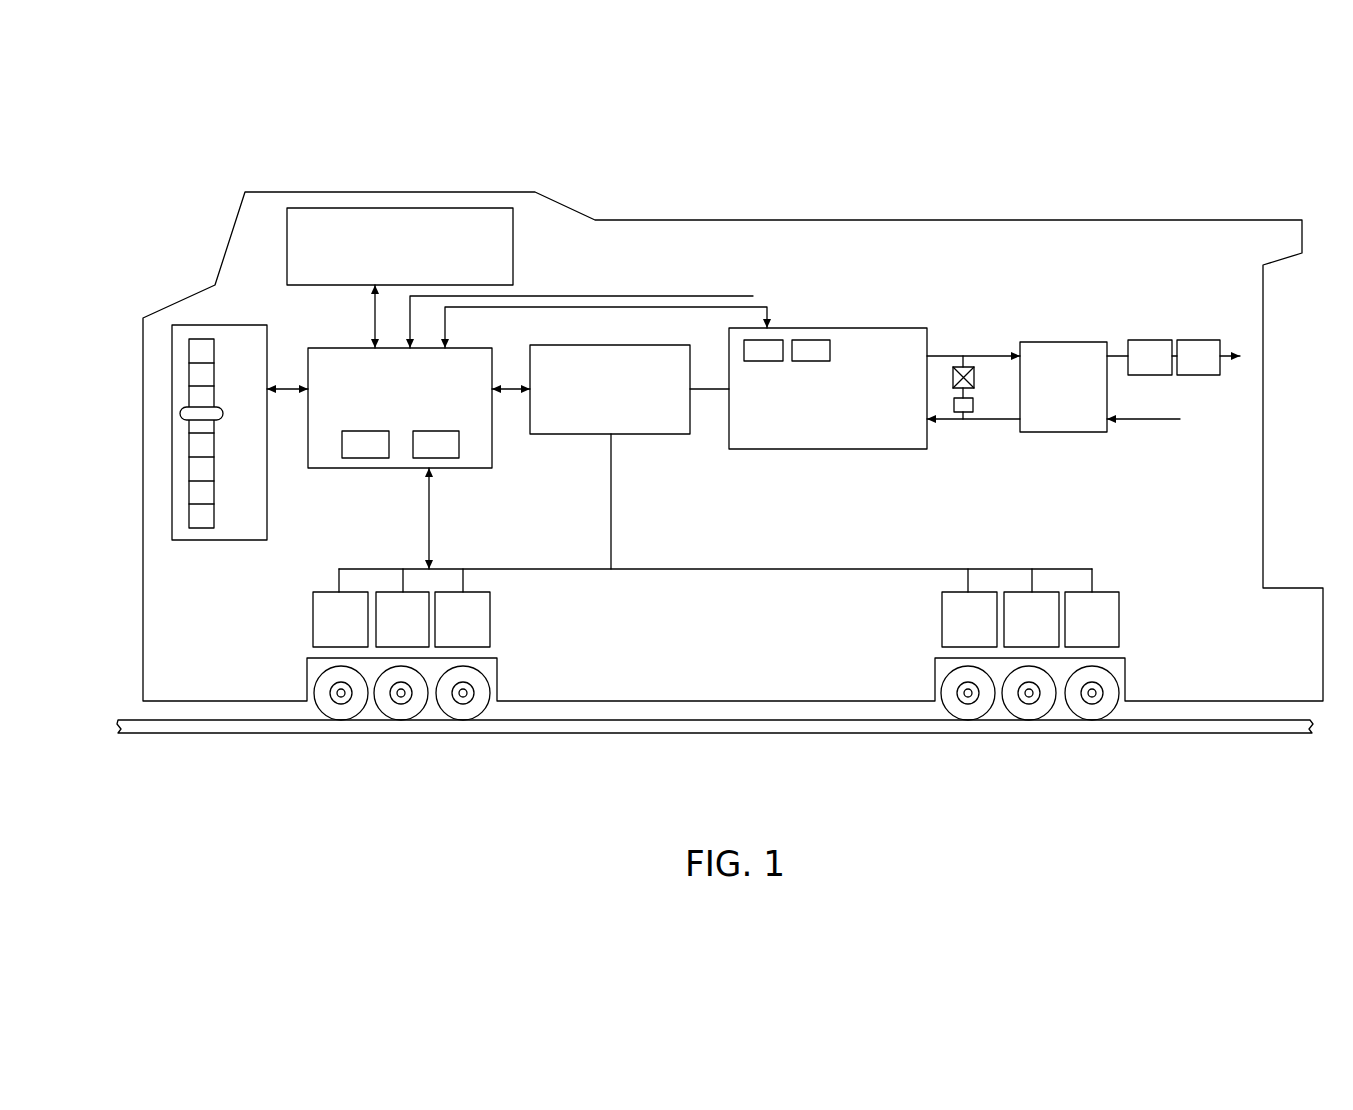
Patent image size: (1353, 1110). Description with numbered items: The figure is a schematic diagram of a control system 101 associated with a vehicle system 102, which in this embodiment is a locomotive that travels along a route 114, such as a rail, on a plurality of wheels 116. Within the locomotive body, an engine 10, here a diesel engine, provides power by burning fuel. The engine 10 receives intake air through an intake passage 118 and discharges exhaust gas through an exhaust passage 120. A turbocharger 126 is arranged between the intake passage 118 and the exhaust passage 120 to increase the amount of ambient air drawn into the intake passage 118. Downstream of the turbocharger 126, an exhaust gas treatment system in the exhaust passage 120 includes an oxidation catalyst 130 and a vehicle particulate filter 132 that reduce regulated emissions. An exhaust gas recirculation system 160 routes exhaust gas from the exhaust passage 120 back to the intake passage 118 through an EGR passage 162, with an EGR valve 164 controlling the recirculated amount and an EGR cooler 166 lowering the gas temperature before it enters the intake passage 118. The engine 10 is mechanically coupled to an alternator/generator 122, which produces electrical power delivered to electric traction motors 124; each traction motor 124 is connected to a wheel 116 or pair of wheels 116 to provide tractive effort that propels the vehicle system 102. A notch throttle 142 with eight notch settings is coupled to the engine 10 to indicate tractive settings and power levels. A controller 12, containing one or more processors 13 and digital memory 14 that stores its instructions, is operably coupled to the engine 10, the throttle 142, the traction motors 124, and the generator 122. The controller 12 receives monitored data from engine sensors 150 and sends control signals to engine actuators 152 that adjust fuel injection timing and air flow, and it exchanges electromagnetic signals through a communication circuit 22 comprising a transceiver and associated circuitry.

The control system 101 is at (992, 115).
The vehicle system 102 is at (803, 220).
The communication circuit 22 is at (400, 208).
The throttle 142 is at (227, 324).
The controller 12 is at (357, 348).
The processor 13 is at (365, 431).
The memory 14 is at (435, 431).
The alternator/generator 122 is at (612, 345).
The engine 10 is at (880, 328).
The engine sensor 150 is at (806, 340).
The engine actuator 152 is at (748, 340).
The exhaust gas recirculation system 160 is at (942, 340).
The EGR passage 162 is at (978, 396).
The EGR valve 164 is at (966, 365).
The EGR cooler 166 is at (966, 416).
The turbocharger 126 is at (1064, 342).
The intake passage 118 is at (1151, 420).
The exhaust passage 120 is at (1117, 355).
The oxidation catalyst 130 is at (1147, 340).
The vehicle particulate filter 132 is at (1194, 340).
The traction motor 124 is at (327, 592).
The wheels 116 is at (477, 677).
The route 114 is at (716, 735).